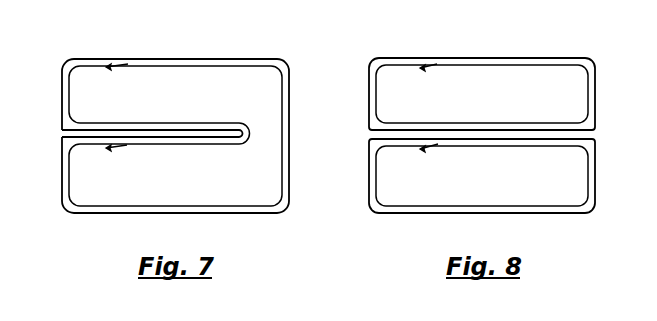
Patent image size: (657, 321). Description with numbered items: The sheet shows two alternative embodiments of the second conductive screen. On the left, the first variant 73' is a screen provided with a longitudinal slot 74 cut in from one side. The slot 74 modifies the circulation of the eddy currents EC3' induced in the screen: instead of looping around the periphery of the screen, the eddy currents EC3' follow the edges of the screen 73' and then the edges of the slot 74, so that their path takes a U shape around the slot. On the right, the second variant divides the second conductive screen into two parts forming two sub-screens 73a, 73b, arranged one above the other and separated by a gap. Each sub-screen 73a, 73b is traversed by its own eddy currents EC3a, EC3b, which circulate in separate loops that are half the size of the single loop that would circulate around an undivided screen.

In FIG. 7, the first variant of the second conductive screen 73' is at (173, 119).
In FIG. 7, the eddy currents EC3' is at (175, 116).
In FIG. 7, the longitudinal slot 74 is at (55, 134).
In FIG. 8, the sub-screen 73a is at (390, 58).
In FIG. 8, the eddy currents EC3a is at (495, 58).
In FIG. 8, the sub-screen 73b is at (418, 213).
In FIG. 8, the eddy currents EC3b is at (548, 213).